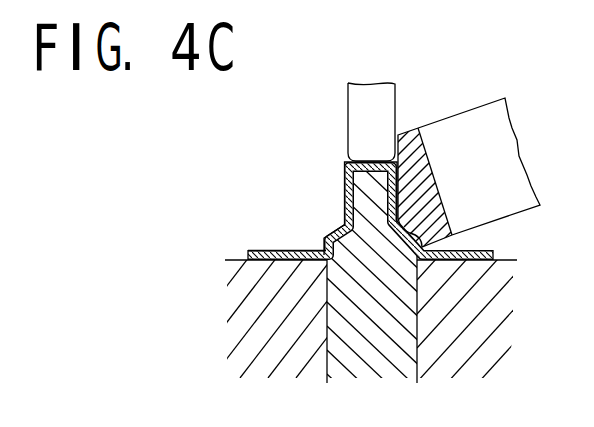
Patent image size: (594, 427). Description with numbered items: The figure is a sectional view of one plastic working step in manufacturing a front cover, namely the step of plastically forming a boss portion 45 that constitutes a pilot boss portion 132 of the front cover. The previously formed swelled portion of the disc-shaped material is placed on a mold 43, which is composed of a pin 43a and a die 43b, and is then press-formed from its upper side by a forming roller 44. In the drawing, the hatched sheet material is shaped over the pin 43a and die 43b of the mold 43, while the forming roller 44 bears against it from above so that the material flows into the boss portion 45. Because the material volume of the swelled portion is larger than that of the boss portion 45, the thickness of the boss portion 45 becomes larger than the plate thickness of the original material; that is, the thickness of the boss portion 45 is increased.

The forming roller 44 is at (480, 120).
The boss portion 45 is at (297, 185).
The pilot boss portion 132 is at (344, 177).
The mold 43 is at (264, 187).
The pin 43a is at (326, 236).
The die 43b is at (258, 283).